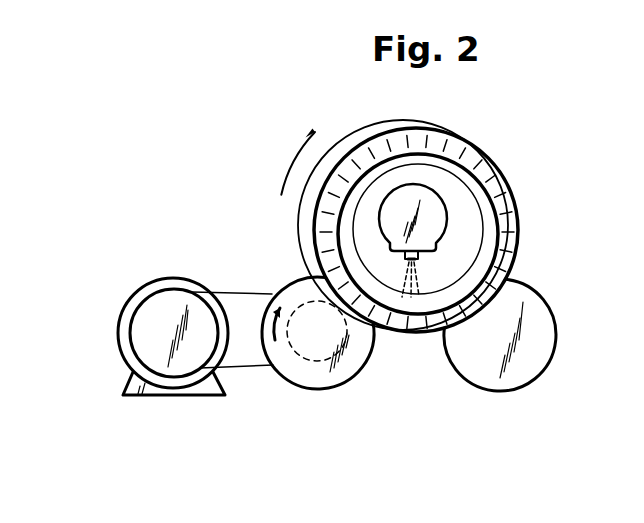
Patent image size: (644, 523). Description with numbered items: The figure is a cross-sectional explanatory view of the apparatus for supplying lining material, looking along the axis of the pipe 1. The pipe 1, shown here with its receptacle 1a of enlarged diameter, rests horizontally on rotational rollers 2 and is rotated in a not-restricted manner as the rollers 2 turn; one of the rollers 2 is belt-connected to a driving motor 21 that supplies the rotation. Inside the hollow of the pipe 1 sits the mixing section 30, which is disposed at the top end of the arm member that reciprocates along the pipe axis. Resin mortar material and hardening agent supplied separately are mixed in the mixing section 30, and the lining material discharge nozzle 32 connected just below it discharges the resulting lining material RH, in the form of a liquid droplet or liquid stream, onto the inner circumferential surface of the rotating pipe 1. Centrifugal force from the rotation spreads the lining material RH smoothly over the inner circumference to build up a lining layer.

The pipe 1 is at (493, 142).
The receptacle of enlarged diameter 1a is at (505, 180).
The rotational rollers 2 is at (302, 380).
The driving motor 21 is at (165, 282).
The mixing section 30 is at (378, 232).
The lining material discharge nozzle 32 is at (420, 257).
The lining material RH is at (415, 292).